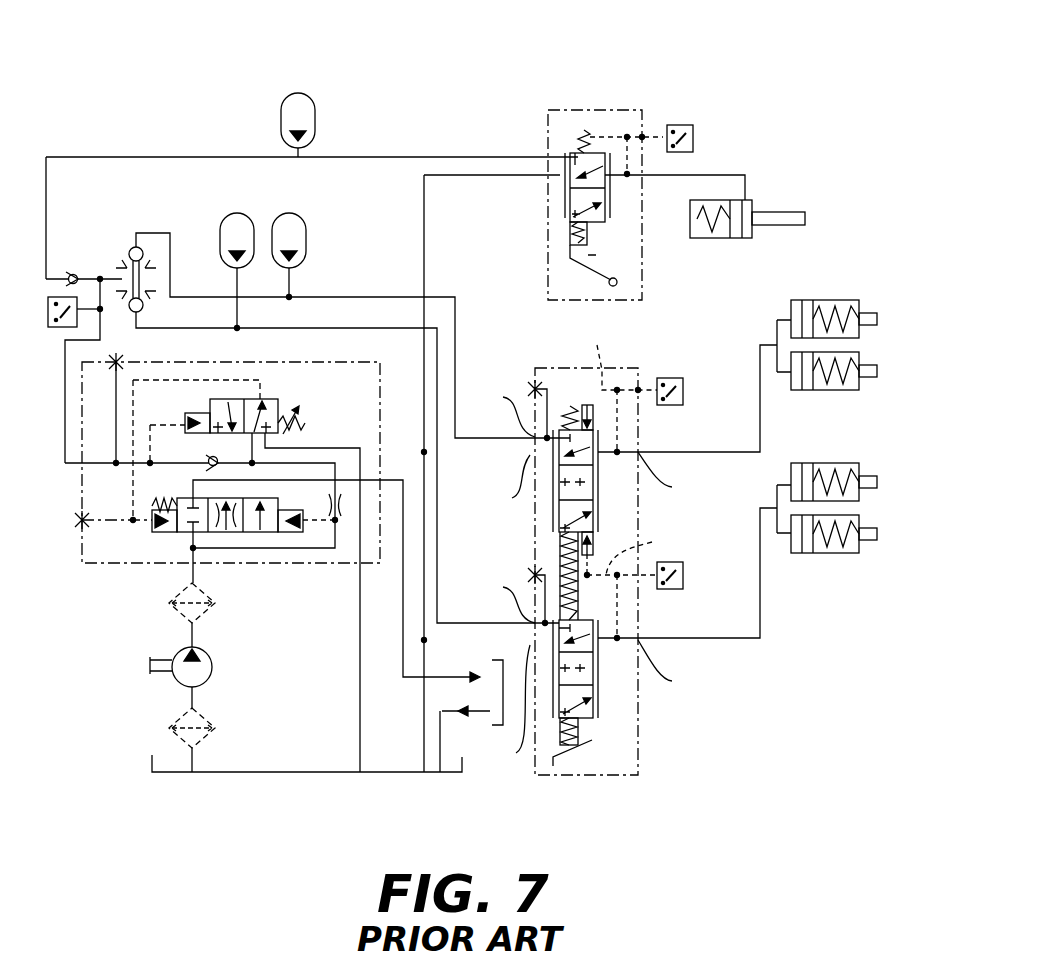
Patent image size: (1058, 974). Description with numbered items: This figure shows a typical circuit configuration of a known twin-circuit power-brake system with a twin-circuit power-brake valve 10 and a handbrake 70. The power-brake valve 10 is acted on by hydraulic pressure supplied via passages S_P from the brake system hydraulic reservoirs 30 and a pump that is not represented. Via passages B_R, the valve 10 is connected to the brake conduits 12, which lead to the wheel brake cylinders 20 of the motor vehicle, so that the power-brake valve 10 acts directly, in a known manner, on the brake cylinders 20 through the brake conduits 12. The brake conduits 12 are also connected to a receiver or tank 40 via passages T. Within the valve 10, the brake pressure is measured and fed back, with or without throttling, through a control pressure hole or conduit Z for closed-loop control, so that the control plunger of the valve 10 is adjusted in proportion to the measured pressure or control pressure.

The brake system hydraulic reservoir 30 is at (322, 90).
The handbrake 70 is at (608, 102).
The power-brake valve 10 is at (632, 361).
The brake conduit 12 is at (718, 432).
The brake cylinder 20 is at (816, 298).
The tank 40 is at (276, 760).